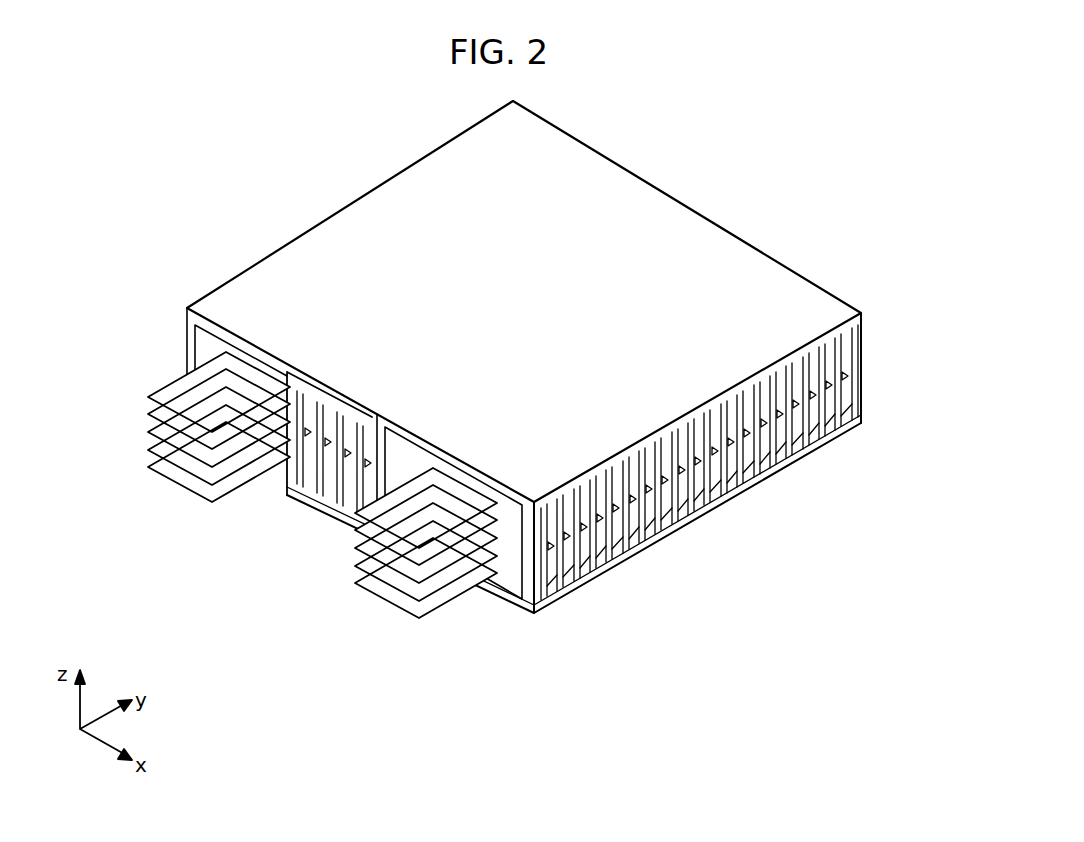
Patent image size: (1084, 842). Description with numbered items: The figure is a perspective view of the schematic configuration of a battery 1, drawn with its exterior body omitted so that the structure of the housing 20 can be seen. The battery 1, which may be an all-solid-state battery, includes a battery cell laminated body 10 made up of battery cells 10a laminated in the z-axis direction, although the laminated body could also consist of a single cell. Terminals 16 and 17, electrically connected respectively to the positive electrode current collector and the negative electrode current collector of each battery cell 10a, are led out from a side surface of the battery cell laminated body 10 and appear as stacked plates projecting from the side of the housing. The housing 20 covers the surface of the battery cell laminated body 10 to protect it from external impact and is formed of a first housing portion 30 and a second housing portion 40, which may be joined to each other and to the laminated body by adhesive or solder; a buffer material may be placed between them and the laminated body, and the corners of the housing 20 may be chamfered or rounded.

The battery 1 is at (266, 140).
The battery cell laminated body 10 is at (504, 460).
The battery cell 10a is at (205, 341).
The terminal 16 is at (180, 398).
The terminal 17 is at (402, 525).
The housing 20 is at (574, 575).
The first housing portion 30 is at (523, 465).
The second housing portion 40 is at (567, 600).